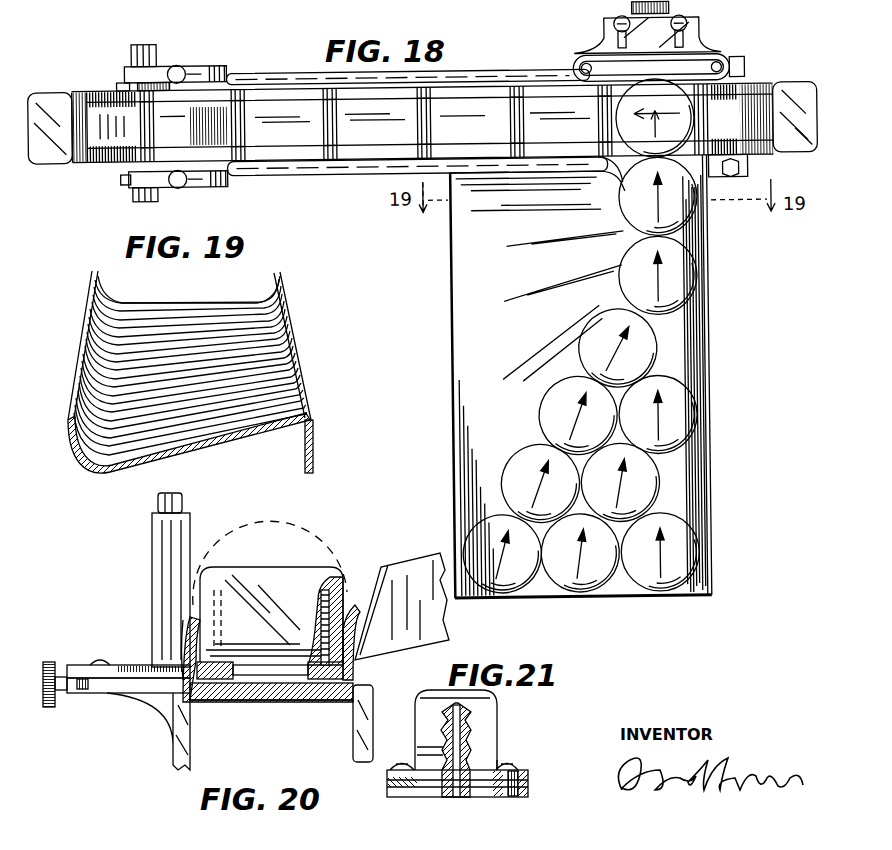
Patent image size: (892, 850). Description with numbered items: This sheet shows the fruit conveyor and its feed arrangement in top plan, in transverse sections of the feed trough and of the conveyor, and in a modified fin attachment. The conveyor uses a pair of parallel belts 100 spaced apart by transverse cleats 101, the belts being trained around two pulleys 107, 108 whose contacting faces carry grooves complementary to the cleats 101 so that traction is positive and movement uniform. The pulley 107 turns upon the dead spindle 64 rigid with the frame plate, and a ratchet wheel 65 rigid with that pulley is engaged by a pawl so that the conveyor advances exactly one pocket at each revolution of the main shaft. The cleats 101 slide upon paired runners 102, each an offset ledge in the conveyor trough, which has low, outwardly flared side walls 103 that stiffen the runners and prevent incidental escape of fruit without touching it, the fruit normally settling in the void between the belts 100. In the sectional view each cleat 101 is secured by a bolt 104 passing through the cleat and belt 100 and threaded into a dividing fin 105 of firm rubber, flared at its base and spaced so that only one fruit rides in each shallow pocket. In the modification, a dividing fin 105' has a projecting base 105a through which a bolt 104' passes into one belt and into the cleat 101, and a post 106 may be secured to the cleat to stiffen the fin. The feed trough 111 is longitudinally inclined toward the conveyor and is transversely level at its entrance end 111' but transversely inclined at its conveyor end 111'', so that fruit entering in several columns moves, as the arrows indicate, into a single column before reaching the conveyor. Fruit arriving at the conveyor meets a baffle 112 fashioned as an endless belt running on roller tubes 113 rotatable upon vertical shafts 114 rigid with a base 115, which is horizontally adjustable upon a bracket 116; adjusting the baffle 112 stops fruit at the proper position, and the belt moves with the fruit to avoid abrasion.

In FIG. 18, the spindle 64 is at (137, 48).
In FIG. 18, the ratchet wheel 65 is at (125, 83).
In FIG. 18, the parallel belts 100 is at (112, 162).
In FIG. 20, the parallel belts 100 is at (238, 679).
In FIG. 21, the parallel belts 100 is at (527, 781).
In FIG. 20, the transverse cleats 101 is at (293, 700).
In FIG. 21, the transverse cleats 101 is at (430, 790).
In FIG. 20, the runners 102 is at (230, 694).
In FIG. 18, the side walls 103 is at (490, 79).
In FIG. 20, the side walls 103 is at (180, 647).
In FIG. 20, the bolt 104 is at (347, 604).
In FIG. 21, the bolt 104' is at (516, 801).
In FIG. 18, the dividing fin 105 is at (422, 123).
In FIG. 20, the dividing fin 105 is at (271, 614).
In FIG. 21, the dividing fin 105' is at (441, 720).
In FIG. 21, the projecting base 105a is at (527, 773).
In FIG. 21, the post 106 is at (454, 797).
In FIG. 18, the pulley 107 is at (150, 127).
In FIG. 18, the pulley 108 is at (743, 119).
In FIG. 18, the feed trough 111 is at (601, 378).
In FIG. 19, the feed trough 111 is at (207, 363).
In FIG. 20, the feed trough 111 is at (402, 612).
In FIG. 18, the entrance end 111' is at (583, 611).
In FIG. 19, the entrance end 111' is at (189, 290).
In FIG. 18, the conveyor end 111'' is at (594, 182).
In FIG. 19, the conveyor end 111'' is at (190, 443).
In FIG. 18, the baffle 112 is at (678, 82).
In FIG. 20, the baffle 112 is at (167, 550).
In FIG. 18, the tubes 113 is at (680, 70).
In FIG. 18, the vertical shafts 114 is at (584, 58).
In FIG. 20, the vertical shafts 114 is at (183, 500).
In FIG. 18, the base 115 is at (690, 32).
In FIG. 20, the base 115 is at (80, 665).
In FIG. 20, the bracket 116 is at (107, 686).